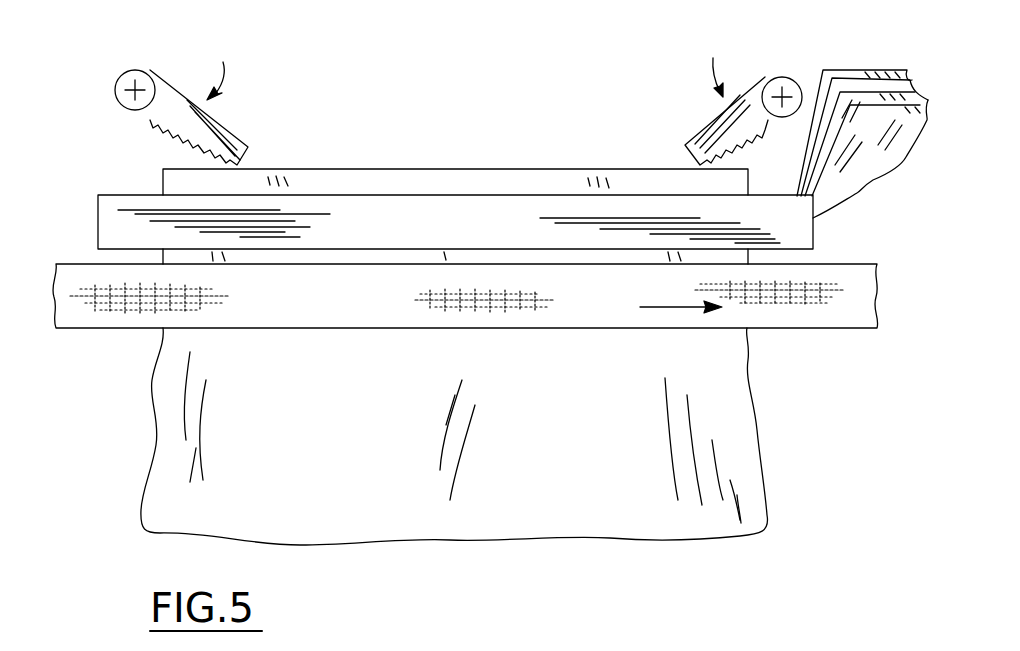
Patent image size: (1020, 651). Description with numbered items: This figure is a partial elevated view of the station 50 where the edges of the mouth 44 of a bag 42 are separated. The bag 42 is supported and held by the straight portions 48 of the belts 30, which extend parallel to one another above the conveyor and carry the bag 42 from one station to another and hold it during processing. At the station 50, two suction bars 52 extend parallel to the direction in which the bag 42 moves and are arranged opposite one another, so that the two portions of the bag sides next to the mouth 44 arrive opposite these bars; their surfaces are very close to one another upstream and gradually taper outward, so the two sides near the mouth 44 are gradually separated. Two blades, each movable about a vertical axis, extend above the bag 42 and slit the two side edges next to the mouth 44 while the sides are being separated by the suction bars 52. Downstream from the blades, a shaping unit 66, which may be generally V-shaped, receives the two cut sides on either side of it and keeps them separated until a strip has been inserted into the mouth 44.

The belt 30 is at (115, 312).
The bag 42 is at (730, 434).
The mouth 44 is at (418, 169).
The straight portion 48 is at (344, 328).
The station 50 is at (548, 118).
The suction bar 52 is at (501, 212).
The shaping unit 66 is at (863, 163).